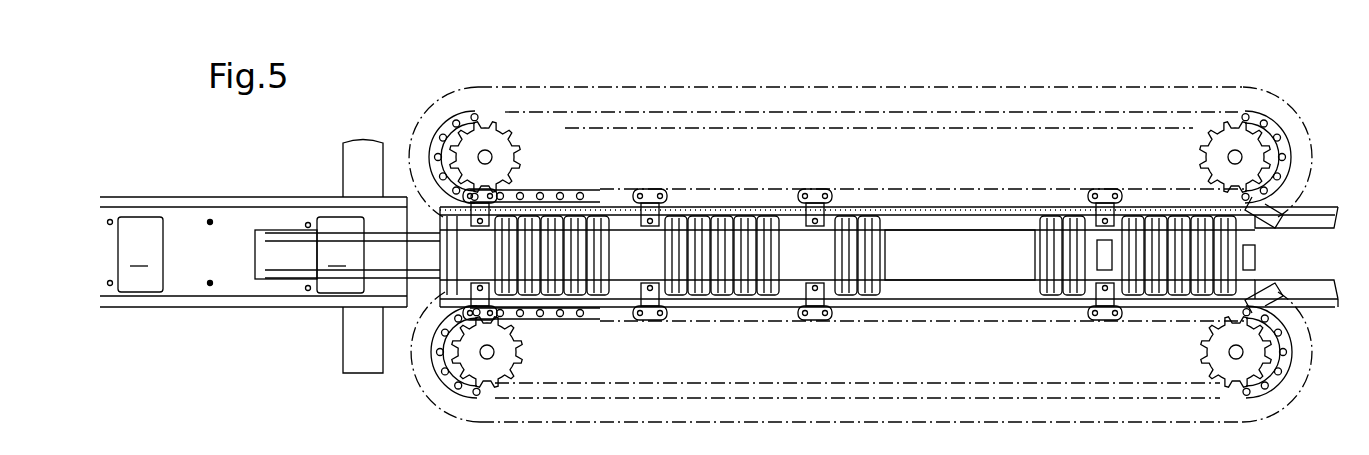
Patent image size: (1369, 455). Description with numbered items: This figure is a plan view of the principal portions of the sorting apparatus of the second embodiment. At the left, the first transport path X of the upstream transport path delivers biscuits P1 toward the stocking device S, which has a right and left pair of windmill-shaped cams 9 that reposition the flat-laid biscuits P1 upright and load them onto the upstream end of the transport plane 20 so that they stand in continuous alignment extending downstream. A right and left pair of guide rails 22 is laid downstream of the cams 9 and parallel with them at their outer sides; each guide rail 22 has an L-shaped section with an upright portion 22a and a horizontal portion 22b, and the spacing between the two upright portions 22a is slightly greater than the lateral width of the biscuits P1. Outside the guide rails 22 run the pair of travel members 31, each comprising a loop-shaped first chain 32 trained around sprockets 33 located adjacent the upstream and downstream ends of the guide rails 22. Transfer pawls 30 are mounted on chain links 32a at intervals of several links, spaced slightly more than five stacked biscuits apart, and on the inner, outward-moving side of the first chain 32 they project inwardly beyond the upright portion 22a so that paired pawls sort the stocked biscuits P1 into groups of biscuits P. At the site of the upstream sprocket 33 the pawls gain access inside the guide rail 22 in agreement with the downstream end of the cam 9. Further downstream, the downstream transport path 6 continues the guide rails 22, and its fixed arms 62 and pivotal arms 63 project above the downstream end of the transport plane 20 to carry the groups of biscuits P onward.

The first transport path X is at (187, 210).
The cam 9 is at (275, 235).
The stocking device S is at (300, 210).
The biscuit P1 is at (505, 297).
The group of biscuits P is at (628, 352).
The guide rail 22 is at (995, 212).
The upright portion 22a is at (930, 212).
The horizontal portion 22b is at (985, 232).
The transport plane 20 is at (905, 228).
The transfer pawl 30 is at (497, 200).
The first chain 32 is at (636, 190).
The chain link 32a is at (1282, 176).
The sprocket 33 is at (487, 132).
The travel member 31 is at (420, 118).
The fixed arm 62 is at (1098, 242).
The pivotal arm 63 is at (1258, 258).
The downstream transport path 6 is at (1325, 310).